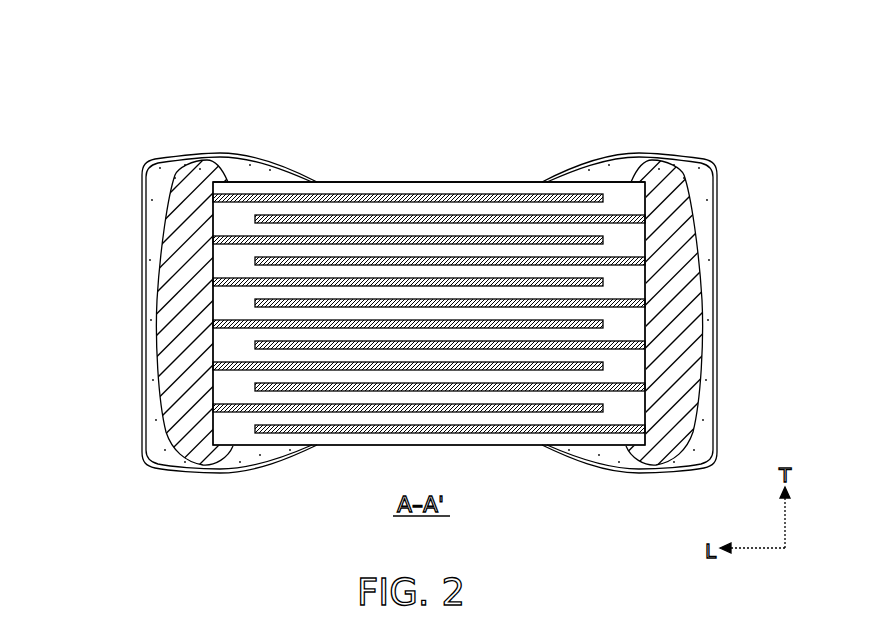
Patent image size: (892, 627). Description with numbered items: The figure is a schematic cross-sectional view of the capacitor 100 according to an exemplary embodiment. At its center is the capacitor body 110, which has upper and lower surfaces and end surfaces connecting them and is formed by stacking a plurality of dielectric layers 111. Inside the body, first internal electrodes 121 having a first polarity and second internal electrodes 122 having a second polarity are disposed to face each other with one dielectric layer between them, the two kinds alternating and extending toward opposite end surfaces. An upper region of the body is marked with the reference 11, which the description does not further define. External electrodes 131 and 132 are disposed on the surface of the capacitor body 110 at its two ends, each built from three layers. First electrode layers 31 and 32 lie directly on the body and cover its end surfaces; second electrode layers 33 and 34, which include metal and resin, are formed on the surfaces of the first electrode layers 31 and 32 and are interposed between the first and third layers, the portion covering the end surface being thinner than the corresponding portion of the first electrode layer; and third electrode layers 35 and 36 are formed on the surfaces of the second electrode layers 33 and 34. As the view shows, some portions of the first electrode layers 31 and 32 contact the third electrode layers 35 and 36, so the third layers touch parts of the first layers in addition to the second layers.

The multilayer capacitor 100 is at (565, 76).
The capacitor body 110 is at (360, 182).
The dielectric layer 111 is at (632, 237).
The cover portion 11 is at (478, 190).
The first internal electrode 121 is at (228, 257).
The second internal electrode 122 is at (623, 266).
The external electrode 131 is at (268, 284).
The external electrode 132 is at (611, 284).
The first electrode layer 31 is at (180, 308).
The first electrode layer 32 is at (688, 328).
The second electrode layer 33 is at (155, 345).
The second electrode layer 34 is at (710, 367).
The third electrode layer 35 is at (84, 297).
The third electrode layer 36 is at (773, 318).